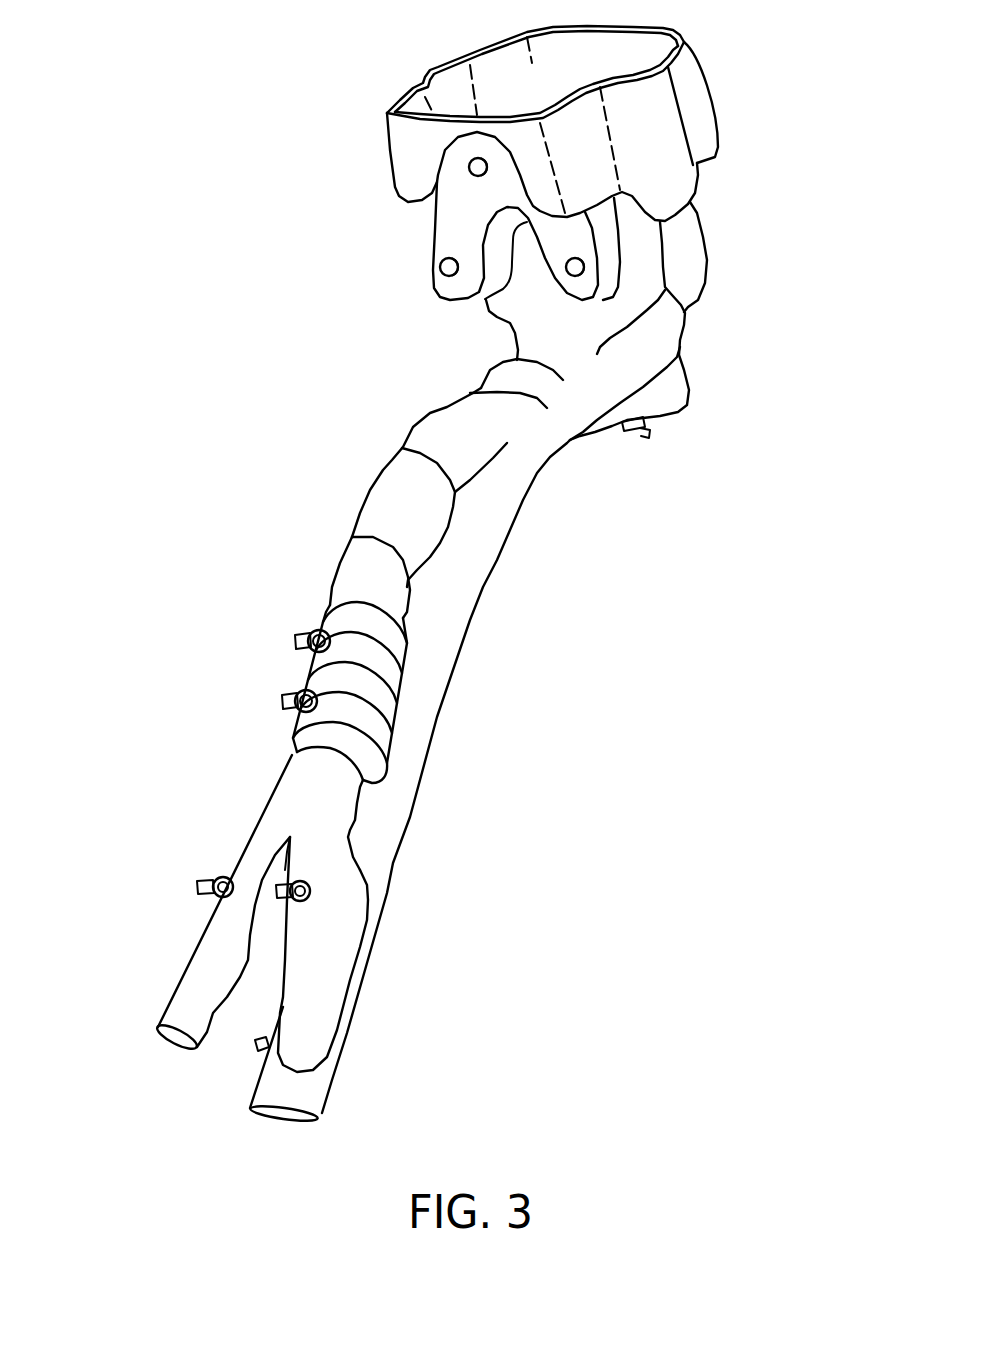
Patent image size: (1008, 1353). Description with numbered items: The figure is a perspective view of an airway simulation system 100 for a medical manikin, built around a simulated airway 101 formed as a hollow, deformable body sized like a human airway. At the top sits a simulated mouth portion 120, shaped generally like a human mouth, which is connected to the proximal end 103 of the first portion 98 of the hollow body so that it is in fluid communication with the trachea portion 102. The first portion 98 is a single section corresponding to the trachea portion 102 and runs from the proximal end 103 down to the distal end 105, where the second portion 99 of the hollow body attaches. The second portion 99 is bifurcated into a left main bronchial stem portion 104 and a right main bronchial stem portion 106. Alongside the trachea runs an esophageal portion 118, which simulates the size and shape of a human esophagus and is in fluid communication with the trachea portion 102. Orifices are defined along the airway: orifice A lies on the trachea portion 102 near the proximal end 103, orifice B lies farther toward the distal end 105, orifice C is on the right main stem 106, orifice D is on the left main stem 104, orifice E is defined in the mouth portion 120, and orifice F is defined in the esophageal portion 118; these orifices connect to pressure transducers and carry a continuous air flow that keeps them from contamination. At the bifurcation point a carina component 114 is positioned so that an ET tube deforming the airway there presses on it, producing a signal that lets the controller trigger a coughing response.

The airway simulation system 100 is at (778, 88).
The simulated mouth portion 120 is at (667, 173).
The simulated airway 101 is at (502, 377).
The proximal end 103 is at (443, 423).
The first portion 98 is at (324, 519).
The trachea portion 102 is at (413, 547).
The esophageal portion 118 is at (443, 722).
The distal end 105 is at (363, 780).
The carina component 114 is at (265, 912).
The second portion 99 is at (149, 973).
The right main bronchial stem portion 106 is at (187, 1004).
The left main bronchial stem portion 104 is at (337, 960).
The orifice A is at (302, 636).
The orifice B is at (287, 694).
The orifice C is at (200, 884).
The orifice D is at (313, 897).
The orifice E is at (640, 437).
The orifice F is at (257, 1050).